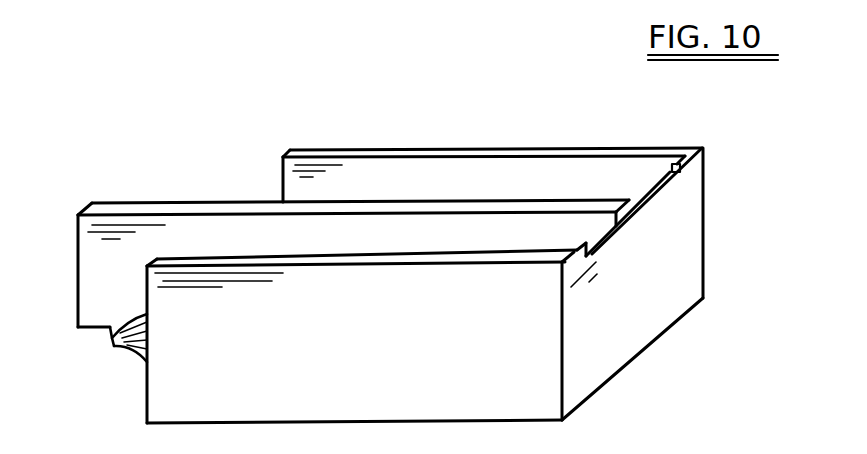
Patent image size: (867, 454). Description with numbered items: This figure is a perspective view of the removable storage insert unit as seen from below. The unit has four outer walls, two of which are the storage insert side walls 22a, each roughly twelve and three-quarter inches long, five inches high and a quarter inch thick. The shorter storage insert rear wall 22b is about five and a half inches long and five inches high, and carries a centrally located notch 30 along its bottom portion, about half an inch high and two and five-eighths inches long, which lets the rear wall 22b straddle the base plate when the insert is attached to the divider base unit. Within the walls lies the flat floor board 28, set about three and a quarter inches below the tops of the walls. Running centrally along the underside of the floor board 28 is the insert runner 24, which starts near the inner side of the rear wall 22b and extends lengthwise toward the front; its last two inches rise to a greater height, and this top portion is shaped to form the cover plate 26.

The storage insert side walls 22a is at (465, 262).
The storage insert rear wall 22b is at (607, 337).
The insert runner 24 is at (222, 228).
The cover plate 26 is at (137, 337).
The floor board 28 is at (370, 253).
The notch 30 is at (612, 233).